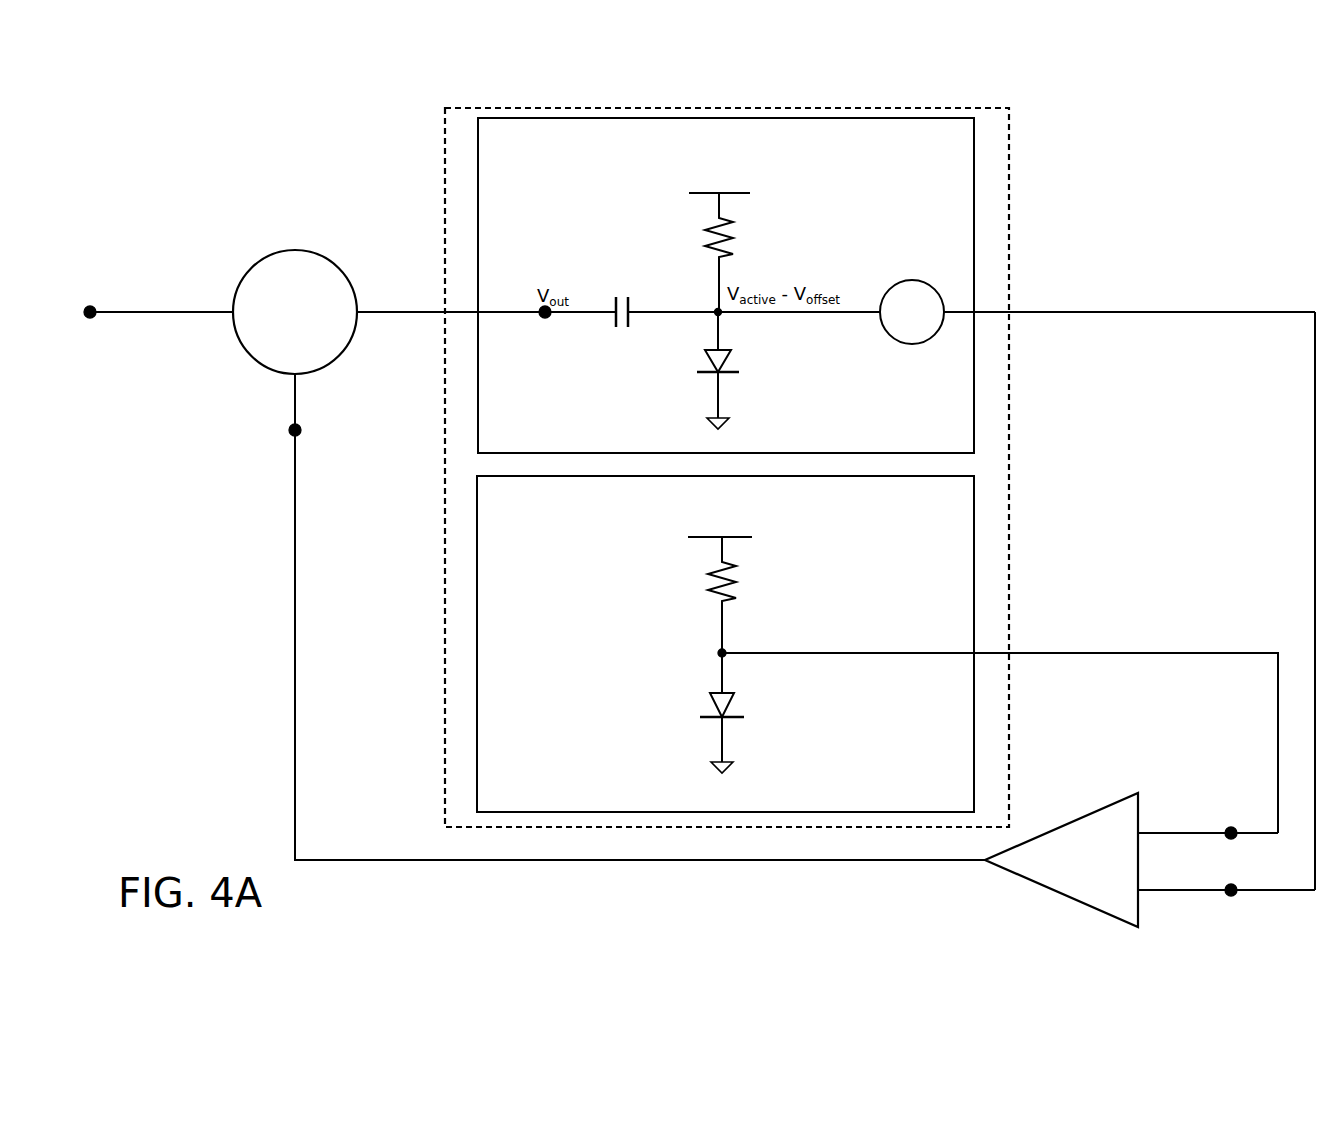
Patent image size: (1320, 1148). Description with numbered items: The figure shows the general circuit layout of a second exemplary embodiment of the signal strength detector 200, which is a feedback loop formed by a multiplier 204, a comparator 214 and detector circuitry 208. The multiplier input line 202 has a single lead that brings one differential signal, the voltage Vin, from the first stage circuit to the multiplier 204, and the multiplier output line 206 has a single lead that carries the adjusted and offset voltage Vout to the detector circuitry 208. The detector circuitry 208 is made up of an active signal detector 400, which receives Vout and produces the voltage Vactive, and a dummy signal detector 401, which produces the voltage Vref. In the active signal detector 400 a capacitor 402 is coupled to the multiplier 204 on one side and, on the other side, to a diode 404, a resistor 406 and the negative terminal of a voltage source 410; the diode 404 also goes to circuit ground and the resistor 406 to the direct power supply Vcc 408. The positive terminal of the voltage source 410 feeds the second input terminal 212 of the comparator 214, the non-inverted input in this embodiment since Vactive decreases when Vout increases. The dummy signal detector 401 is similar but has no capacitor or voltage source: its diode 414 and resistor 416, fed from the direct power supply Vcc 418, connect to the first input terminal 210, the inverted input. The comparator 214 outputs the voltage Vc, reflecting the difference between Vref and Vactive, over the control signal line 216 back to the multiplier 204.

The signal strength detector 200 is at (1226, 209).
The multiplier input line 202 is at (166, 292).
The multiplier 204 is at (290, 249).
The multiplier output line 206 is at (372, 291).
The detector circuitry 208 is at (1030, 171).
The first input terminal 210 is at (1167, 818).
The second input terminal 212 is at (1148, 895).
The comparator 214 is at (1020, 884).
The control signal line 216 is at (305, 847).
The active signal detector 400 is at (726, 285).
The dummy signal detector 401 is at (725, 644).
The capacitor 402 is at (622, 337).
The diode 404 is at (740, 361).
The resistor 406 is at (745, 241).
The direct power supply Vcc 408 is at (797, 192).
The voltage source 410 is at (927, 276).
The diode 414 is at (745, 703).
The resistor 416 is at (745, 579).
The direct power supply Vcc 418 is at (795, 540).